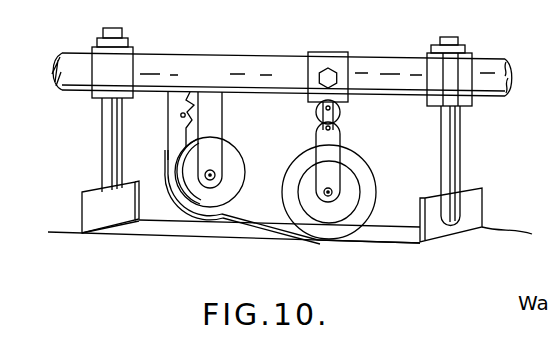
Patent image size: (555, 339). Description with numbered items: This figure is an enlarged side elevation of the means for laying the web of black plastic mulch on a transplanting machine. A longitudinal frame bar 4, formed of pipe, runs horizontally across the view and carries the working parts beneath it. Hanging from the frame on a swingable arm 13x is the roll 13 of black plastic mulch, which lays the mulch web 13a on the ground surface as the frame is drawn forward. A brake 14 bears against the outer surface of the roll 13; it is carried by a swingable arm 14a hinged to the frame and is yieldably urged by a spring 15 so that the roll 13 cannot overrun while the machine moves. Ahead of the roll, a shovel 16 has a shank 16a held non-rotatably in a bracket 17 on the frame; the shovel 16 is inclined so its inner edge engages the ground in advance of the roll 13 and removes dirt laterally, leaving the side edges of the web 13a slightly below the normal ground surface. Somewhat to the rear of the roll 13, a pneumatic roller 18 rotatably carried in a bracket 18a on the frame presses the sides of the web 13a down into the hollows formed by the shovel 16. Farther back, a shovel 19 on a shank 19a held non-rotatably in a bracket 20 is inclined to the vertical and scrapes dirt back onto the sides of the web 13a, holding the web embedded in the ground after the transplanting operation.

The longitudinal bar 4 is at (388, 70).
The roll of black plastic mulch 13 is at (233, 150).
The plastic mulch web 13a is at (248, 221).
The swingable arm 13x is at (212, 115).
The brake 14 is at (177, 151).
The swingable arm 14a is at (168, 122).
The spring 15 is at (188, 90).
The shovel 16 is at (95, 192).
The shank 16a is at (112, 125).
The bracket 17 is at (133, 52).
The pneumatic roller 18 is at (360, 170).
The bracket 18a is at (335, 139).
The shovel 19 is at (472, 200).
The shank 19a is at (453, 137).
The bracket 20 is at (472, 60).